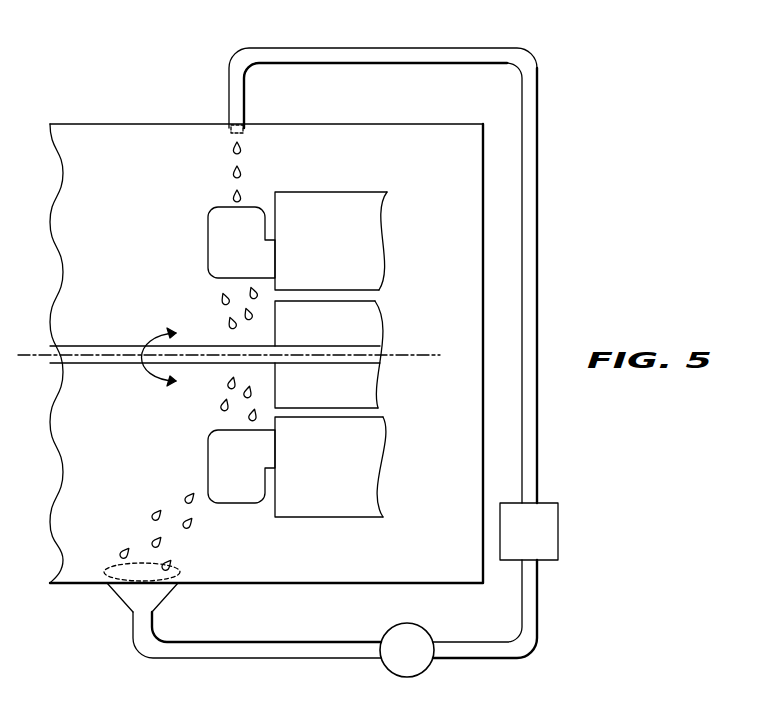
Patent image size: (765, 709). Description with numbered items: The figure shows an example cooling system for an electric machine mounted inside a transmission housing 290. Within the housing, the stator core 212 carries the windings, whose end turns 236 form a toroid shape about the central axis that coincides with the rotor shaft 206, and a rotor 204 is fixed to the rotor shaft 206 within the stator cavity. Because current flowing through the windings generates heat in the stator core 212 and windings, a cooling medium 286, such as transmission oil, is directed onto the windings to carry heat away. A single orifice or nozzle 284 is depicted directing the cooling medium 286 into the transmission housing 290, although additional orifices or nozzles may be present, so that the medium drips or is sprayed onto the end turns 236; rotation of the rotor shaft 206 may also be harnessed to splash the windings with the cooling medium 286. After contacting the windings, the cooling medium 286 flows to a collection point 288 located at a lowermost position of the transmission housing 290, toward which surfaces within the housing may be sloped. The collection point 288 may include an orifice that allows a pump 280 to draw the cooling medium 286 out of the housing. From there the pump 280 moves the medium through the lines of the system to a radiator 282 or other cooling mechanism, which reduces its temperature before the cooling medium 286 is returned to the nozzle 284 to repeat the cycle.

The transmission housing 290 is at (158, 125).
The nozzle 284 is at (243, 130).
The cooling medium 286 is at (232, 150).
The end turns 236 is at (208, 248).
The stator core 212 is at (331, 241).
The rotor 204 is at (329, 354).
The rotor shaft 206 is at (330, 358).
The collection point 288 is at (112, 565).
The pump 280 is at (407, 650).
The radiator 282 is at (558, 520).